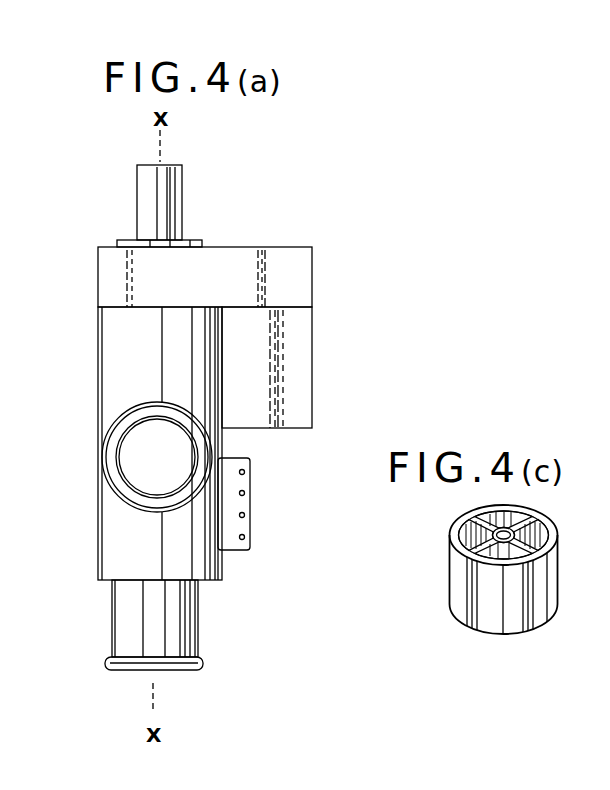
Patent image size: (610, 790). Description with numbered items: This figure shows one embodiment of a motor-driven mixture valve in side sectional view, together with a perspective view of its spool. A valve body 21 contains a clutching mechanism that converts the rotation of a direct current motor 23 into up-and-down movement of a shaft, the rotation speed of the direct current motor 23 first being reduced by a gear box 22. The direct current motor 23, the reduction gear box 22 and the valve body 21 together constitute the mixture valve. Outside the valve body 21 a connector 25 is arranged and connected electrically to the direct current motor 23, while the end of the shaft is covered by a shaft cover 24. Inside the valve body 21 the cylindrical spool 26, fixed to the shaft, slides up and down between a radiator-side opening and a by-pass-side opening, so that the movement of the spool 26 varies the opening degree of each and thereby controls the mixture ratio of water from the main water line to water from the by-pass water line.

The valve body 21 is at (105, 330).
The gear box 22 is at (281, 253).
The direct current motor 23 is at (302, 377).
The shaft cover 24 is at (165, 195).
The connector 25 is at (243, 503).
The spool 26 is at (452, 585).